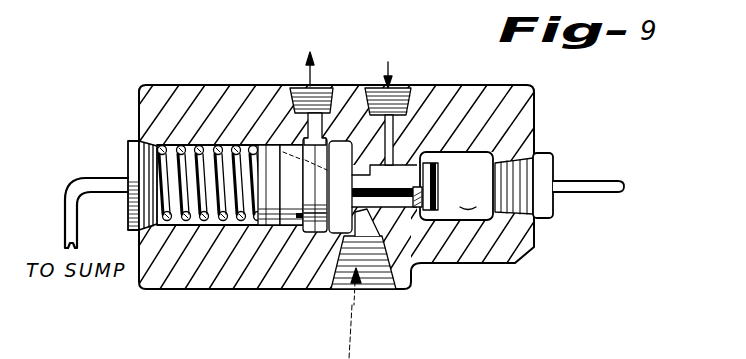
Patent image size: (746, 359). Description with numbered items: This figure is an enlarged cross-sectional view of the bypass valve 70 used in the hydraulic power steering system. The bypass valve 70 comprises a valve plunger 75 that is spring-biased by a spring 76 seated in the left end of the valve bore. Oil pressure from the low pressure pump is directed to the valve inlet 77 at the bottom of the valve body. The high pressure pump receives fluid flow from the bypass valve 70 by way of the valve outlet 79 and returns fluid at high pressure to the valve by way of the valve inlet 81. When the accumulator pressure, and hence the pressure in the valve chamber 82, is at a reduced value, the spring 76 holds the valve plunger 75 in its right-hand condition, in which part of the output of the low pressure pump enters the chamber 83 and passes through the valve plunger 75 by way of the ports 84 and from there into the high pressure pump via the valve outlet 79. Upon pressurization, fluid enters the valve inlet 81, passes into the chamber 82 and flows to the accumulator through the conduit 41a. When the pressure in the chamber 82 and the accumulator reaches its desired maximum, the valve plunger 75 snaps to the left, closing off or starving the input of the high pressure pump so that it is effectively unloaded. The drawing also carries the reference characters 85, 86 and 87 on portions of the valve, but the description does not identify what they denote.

The bypass valve 70 is at (527, 260).
The valve plunger 75 is at (397, 205).
The spring 76 is at (204, 220).
The valve inlet 77 is at (359, 278).
The valve outlet 79 is at (321, 90).
The valve inlet 81 is at (407, 90).
The valve chamber 82 is at (454, 186).
The chamber 83 is at (340, 145).
The ports 84 is at (293, 152).
The spring chamber 85 is at (253, 110).
The spool end piece 86 is at (268, 233).
The housing wall 87 is at (316, 285).
The conduit 41a is at (589, 194).